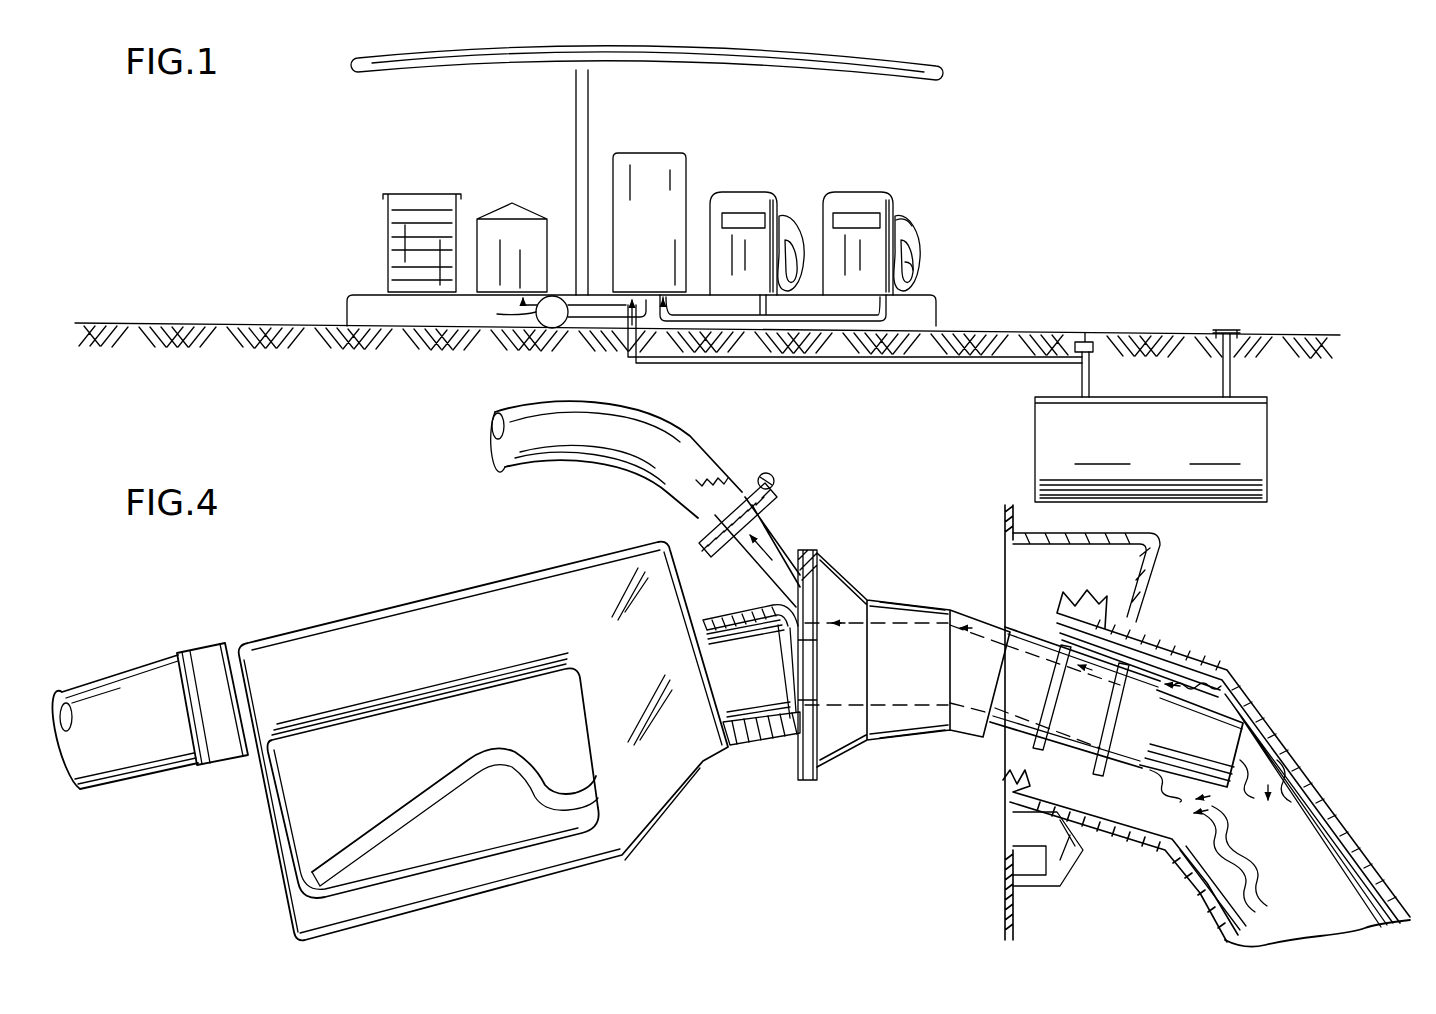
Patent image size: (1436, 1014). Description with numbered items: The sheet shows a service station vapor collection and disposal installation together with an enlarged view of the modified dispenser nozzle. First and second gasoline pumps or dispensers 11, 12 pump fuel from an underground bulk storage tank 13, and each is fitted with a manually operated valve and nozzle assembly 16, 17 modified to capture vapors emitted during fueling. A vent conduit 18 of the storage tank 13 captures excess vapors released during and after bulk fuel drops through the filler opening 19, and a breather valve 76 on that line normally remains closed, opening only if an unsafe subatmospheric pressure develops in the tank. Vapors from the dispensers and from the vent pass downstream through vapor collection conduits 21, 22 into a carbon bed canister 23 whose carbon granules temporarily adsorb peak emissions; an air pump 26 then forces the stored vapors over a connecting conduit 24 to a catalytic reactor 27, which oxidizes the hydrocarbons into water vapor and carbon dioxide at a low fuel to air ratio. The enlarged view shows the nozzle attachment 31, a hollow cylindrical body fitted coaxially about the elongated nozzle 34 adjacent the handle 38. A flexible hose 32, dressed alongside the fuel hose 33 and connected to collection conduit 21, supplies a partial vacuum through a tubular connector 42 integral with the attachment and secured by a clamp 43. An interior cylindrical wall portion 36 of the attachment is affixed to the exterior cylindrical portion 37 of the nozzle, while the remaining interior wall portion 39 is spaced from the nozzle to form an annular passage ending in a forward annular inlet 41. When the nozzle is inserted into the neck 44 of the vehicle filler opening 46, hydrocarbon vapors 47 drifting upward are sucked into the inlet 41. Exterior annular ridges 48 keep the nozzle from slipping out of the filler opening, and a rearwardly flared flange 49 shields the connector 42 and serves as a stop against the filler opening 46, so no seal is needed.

In FIG. 1, the gasoline pump or dispenser 11 is at (750, 192).
In FIG. 1, the gasoline pump or dispenser 12 is at (858, 192).
In FIG. 1, the underground bulk storage tank 13 is at (1245, 412).
In FIG. 1, the valve and nozzle assembly 16 is at (792, 220).
In FIG. 1, the valve and nozzle assembly 17 is at (914, 218).
In FIG. 4, the valve and nozzle assembly 17 is at (685, 795).
In FIG. 1, the vent piping or conduit 18 is at (1090, 376).
In FIG. 1, the filler opening 19 is at (1235, 342).
In FIG. 1, the vapor collection line or conduit 21 is at (886, 320).
In FIG. 1, the vapor collection line or conduit 22 is at (928, 364).
In FIG. 1, the carbon bed canister 23 is at (641, 153).
In FIG. 1, the connecting conduit 24 is at (592, 318).
In FIG. 1, the air pump 26 is at (547, 326).
In FIG. 1, the catalytic reactor 27 is at (511, 212).
In FIG. 1, the nozzle attachment 31 is at (910, 220).
In FIG. 4, the nozzle attachment 31 is at (907, 737).
In FIG. 1, the flexible hose 32 is at (920, 240).
In FIG. 4, the flexible hose 32 is at (690, 438).
In FIG. 1, the fuel hose 33 is at (914, 268).
In FIG. 4, the fuel hose 33 is at (96, 684).
In FIG. 4, the nozzle 34 is at (1197, 690).
In FIG. 4, the interior cylindrical wall portion 36 is at (756, 722).
In FIG. 4, the exterior cylindrical portion 37 is at (738, 643).
In FIG. 4, the handle 38 is at (312, 628).
In FIG. 4, the interior wall portion 39 is at (928, 618).
In FIG. 4, the forward annular inlet 41 is at (1148, 770).
In FIG. 4, the tubular connector 42 is at (787, 540).
In FIG. 4, the clamp 43 is at (780, 487).
In FIG. 4, the neck 44 is at (1156, 642).
In FIG. 4, the vehicle fuel tank filler opening 46 is at (1010, 763).
In FIG. 4, the hydrocarbon vapors 47 is at (1146, 768).
In FIG. 4, the exterior annular ridge 48 is at (1040, 752).
In FIG. 4, the rearwardly flared annular flange portion 49 is at (818, 775).
In FIG. 1, the breather valve 76 is at (1094, 342).